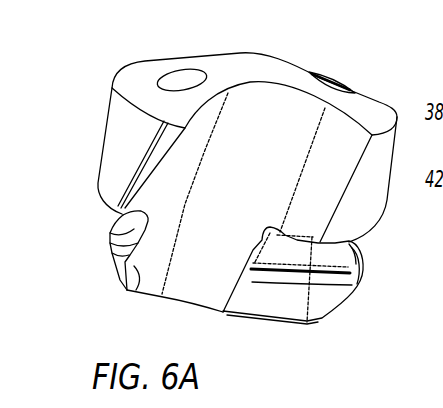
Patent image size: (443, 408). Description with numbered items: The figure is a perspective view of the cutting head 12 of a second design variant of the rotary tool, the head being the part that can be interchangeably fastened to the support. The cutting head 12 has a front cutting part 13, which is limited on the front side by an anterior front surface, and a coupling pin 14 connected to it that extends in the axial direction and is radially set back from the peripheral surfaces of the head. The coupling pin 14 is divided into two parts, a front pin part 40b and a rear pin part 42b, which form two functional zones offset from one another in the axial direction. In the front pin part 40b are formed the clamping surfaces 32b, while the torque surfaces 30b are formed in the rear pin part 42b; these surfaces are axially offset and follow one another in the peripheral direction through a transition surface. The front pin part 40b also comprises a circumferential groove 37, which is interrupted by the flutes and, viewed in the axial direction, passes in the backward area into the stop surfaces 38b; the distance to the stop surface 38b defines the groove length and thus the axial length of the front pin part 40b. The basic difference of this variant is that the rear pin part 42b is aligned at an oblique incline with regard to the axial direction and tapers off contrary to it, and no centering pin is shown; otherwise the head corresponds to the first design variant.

The cutting head 12 is at (349, 52).
The cutting part 13 is at (123, 135).
The coupling pin 14 is at (327, 299).
The torque surfaces 30b is at (257, 297).
The clamping surfaces 32b is at (352, 246).
The circumferential groove 37 is at (95, 243).
The front pin part 40b is at (111, 232).
The stop surfaces 38b is at (357, 283).
The rear pin part 42b is at (129, 292).